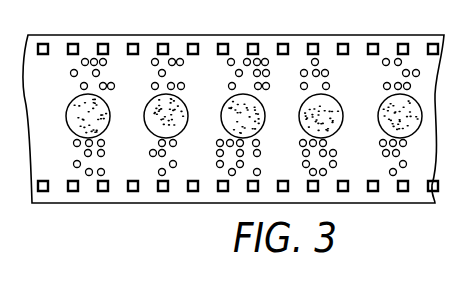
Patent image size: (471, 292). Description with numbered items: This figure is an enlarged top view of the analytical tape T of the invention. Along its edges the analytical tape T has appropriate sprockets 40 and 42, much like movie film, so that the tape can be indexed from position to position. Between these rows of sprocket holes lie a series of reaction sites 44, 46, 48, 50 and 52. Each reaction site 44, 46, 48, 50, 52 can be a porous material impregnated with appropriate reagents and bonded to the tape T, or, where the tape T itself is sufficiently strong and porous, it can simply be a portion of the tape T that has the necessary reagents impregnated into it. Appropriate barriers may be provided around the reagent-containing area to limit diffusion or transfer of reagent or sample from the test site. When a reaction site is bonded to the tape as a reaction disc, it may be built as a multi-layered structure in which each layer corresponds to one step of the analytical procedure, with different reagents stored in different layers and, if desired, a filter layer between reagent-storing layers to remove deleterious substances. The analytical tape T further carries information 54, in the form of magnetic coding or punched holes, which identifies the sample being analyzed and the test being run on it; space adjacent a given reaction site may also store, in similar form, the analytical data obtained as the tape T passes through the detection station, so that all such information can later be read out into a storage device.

The analytical tape T is at (358, 47).
The sprocket 40 is at (162, 43).
The sprocket 42 is at (194, 191).
The reaction site 44 is at (113, 107).
The reaction site 46 is at (193, 107).
The reaction site 48 is at (268, 107).
The reaction site 50 is at (337, 115).
The reaction site 52 is at (413, 121).
The information 54 is at (84, 58).